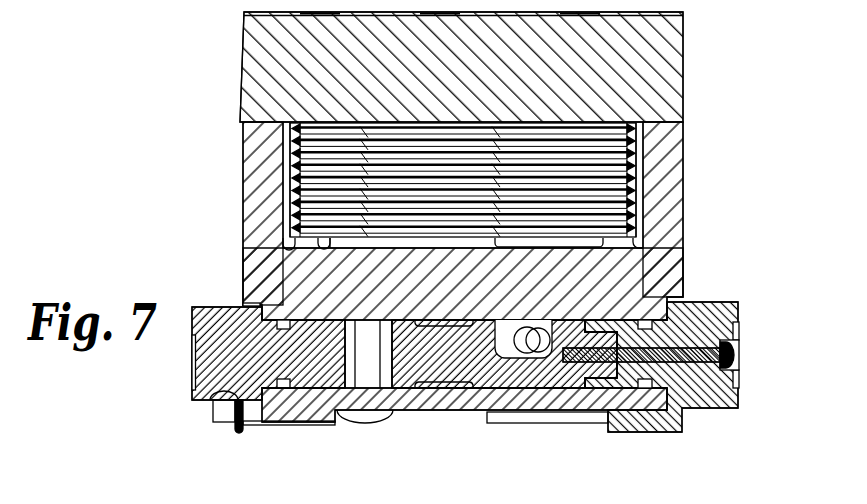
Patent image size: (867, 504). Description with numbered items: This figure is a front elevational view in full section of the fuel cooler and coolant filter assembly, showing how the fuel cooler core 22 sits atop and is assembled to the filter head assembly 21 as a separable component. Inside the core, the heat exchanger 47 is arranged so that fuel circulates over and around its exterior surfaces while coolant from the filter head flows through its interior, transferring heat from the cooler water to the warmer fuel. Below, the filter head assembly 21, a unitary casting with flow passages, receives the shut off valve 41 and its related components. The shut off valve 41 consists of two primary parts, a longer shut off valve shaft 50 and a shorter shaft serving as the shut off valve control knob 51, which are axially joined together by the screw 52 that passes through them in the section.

The filter head assembly 21 is at (670, 260).
The fuel cooler core 22 is at (650, 62).
The shut off valve 41 is at (206, 400).
The heat exchanger 47 is at (323, 166).
The shut off valve shaft 50 is at (490, 366).
The shut off valve control knob 51 is at (708, 393).
The screw 52 is at (731, 353).